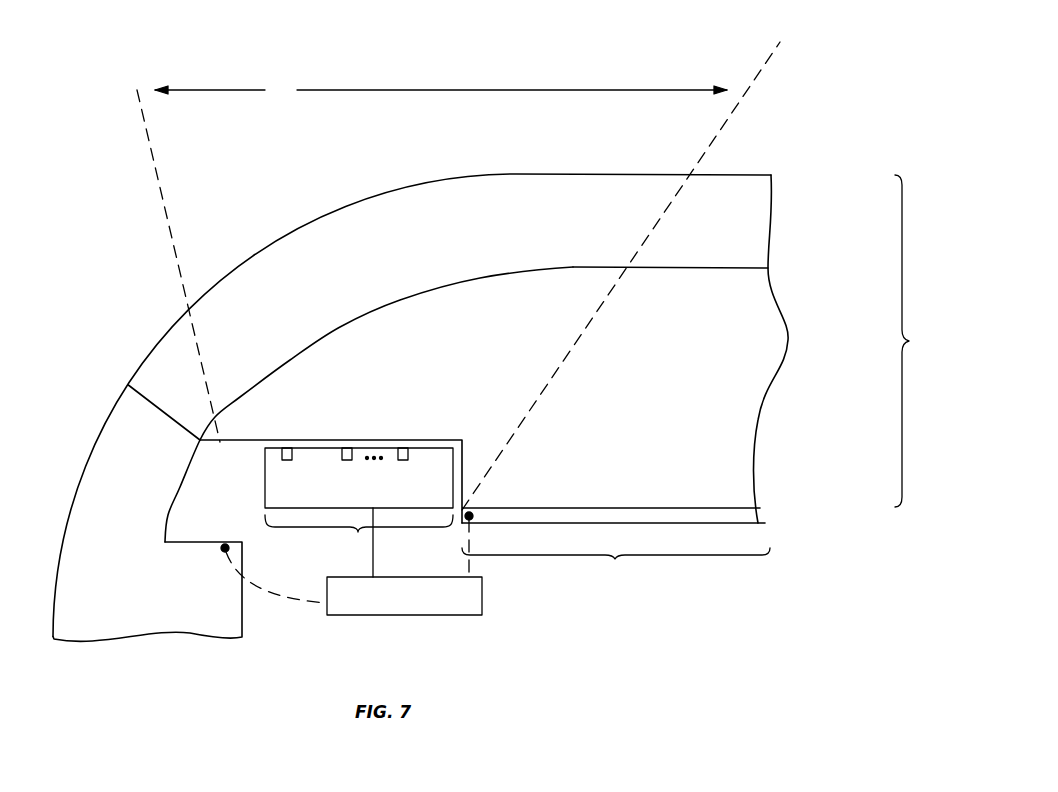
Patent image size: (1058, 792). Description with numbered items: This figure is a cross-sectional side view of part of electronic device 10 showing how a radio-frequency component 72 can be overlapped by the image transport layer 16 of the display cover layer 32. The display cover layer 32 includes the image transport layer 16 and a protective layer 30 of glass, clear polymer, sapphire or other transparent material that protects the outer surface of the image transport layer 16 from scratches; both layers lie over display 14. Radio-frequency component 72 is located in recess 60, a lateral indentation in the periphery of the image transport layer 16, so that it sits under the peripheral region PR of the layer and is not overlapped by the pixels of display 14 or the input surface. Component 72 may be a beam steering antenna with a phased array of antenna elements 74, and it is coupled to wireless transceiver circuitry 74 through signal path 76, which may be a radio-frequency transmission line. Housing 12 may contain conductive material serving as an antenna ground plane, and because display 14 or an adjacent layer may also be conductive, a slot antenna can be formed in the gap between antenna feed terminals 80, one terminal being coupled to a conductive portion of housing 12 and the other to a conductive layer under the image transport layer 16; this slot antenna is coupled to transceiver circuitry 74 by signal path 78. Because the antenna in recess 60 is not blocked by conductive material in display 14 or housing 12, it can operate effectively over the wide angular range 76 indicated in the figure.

The electronic device 10 is at (790, 82).
The housing 12 is at (72, 557).
The display 14 is at (753, 513).
The image transport layer 16 is at (773, 380).
The protective layer 30 is at (772, 203).
The display cover layer 32 is at (845, 349).
The recess 60 is at (234, 467).
The radio-frequency component 72 is at (270, 492).
The antenna elements / wireless transceiver circuitry 74 is at (395, 462).
The signal path / angular range 76 is at (395, 555).
The signal path 78 is at (247, 583).
The antenna feed terminals 80 is at (220, 552).